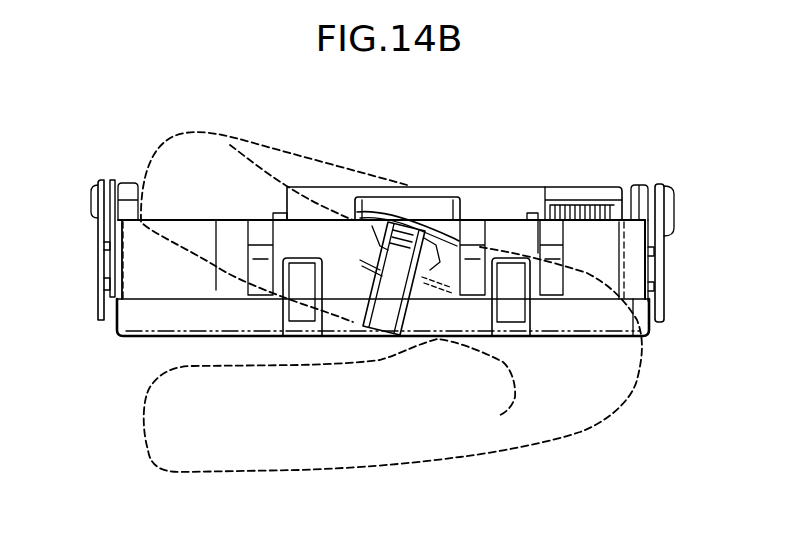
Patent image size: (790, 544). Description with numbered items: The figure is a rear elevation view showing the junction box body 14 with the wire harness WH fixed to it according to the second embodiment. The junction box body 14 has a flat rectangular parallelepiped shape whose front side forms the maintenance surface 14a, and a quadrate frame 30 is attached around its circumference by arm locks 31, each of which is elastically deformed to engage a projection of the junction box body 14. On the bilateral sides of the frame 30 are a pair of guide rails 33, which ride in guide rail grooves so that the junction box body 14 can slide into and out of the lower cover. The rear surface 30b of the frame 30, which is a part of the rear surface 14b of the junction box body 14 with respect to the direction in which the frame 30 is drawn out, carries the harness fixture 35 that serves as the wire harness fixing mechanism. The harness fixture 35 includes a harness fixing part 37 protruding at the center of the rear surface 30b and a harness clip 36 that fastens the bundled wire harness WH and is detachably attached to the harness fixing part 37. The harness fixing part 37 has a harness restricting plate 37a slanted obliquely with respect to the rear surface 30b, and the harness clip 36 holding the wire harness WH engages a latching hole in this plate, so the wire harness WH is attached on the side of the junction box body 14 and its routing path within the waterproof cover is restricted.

The junction box body 14 is at (672, 340).
The maintenance surface 14a is at (540, 186).
The rear surface 14b is at (472, 318).
The frame 30 is at (152, 283).
The rear surface 30b is at (603, 241).
The arm lock 31 is at (109, 262).
The guide rail 33 is at (665, 263).
The harness fixture 35 is at (447, 205).
The harness clip 36 is at (393, 338).
The harness fixing part 37 is at (400, 210).
The harness restricting plate 37a is at (426, 290).
The wire harness WH is at (580, 430).